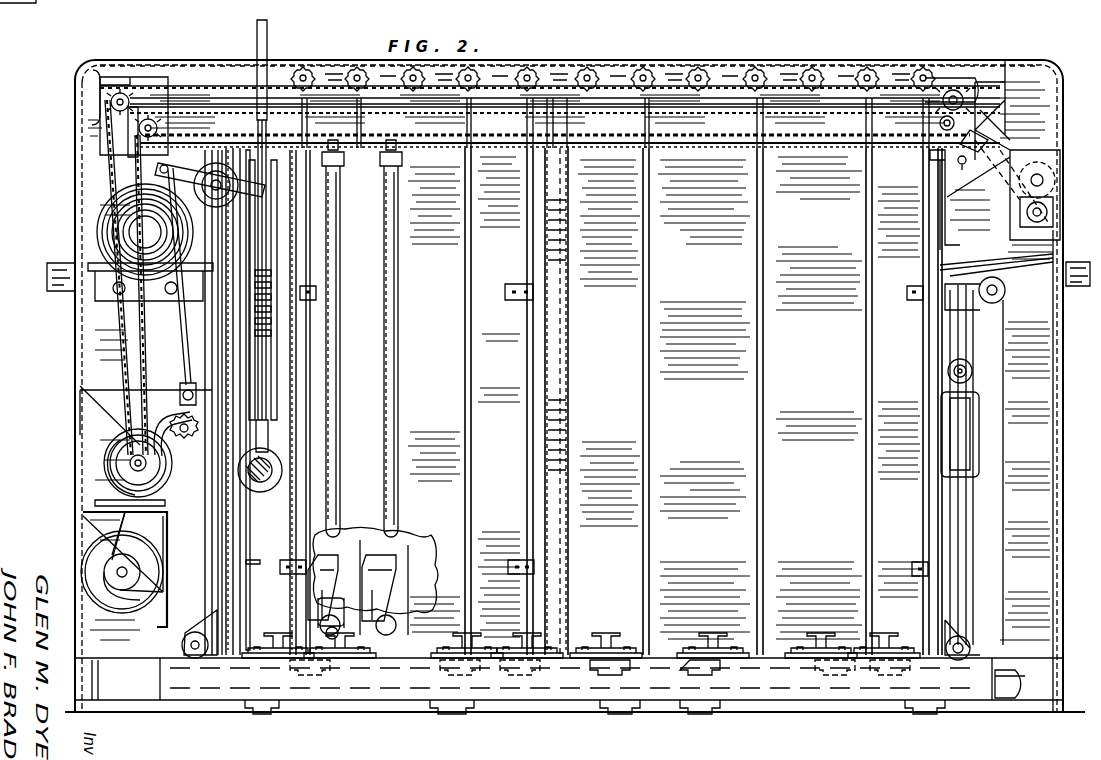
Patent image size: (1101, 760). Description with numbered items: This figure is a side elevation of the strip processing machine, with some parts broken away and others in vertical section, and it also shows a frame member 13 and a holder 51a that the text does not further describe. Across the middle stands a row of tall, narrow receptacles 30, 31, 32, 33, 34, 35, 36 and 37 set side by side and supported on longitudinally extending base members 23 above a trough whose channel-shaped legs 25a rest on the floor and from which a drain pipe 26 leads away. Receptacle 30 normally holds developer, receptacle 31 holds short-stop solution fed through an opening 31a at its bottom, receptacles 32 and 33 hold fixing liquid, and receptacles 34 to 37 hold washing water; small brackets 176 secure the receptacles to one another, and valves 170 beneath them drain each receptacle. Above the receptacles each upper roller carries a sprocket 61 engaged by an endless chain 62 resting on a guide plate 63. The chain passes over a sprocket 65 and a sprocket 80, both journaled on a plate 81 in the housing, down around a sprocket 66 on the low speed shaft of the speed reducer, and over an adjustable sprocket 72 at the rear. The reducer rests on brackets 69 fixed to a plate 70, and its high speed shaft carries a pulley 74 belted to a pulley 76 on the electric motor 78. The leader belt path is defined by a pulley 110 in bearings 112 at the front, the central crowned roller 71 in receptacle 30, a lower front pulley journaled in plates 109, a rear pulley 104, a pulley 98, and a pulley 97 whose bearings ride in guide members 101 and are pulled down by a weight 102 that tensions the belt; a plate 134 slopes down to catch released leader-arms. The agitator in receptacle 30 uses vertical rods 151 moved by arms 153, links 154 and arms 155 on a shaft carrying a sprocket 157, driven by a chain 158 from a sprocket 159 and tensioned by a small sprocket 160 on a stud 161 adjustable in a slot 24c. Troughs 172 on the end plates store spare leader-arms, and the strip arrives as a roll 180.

The frame member 13 is at (235, 322).
The base members 23 is at (112, 708).
The slot 24c is at (135, 425).
The supporting strips or legs 25a is at (700, 714).
The drain pipe 26 is at (1010, 700).
The receptacle 30 is at (270, 556).
The receptacle 31 is at (348, 405).
The opening 31a is at (320, 598).
The receptacle 32 is at (448, 378).
The receptacle 33 is at (510, 378).
The receptacle 34 is at (612, 378).
The receptacle 35 is at (710, 378).
The receptacle 36 is at (810, 378).
The receptacle 37 is at (903, 378).
The holder 51a is at (388, 577).
The sprocket 61 is at (323, 84).
The endless driven chain 62 is at (218, 80).
The guide plate 63 is at (600, 133).
The sprocket 65 is at (128, 96).
The sprocket 66 is at (168, 496).
The brackets 69 is at (134, 612).
The plate 70 is at (178, 605).
The central crowned roller 71 is at (262, 492).
The longitudinally adjustable sprocket 72 is at (965, 90).
The pulley 74 is at (104, 462).
The pulley 76 is at (108, 592).
The electric motor 78 is at (120, 612).
The sprocket 80 is at (130, 140).
The plate 81 is at (90, 92).
The pulley 97 is at (972, 373).
The pulley 98 is at (1002, 300).
The guide members 101 is at (960, 500).
The weight 102 is at (972, 434).
The pulley 104 is at (972, 645).
The plates 109 is at (178, 545).
The pulley 110 is at (276, 286).
The bearings 112 is at (150, 178).
The plate 134 is at (988, 262).
The rods 151 is at (263, 235).
The arms 153 is at (115, 168).
The links 154 is at (185, 335).
The arms 155 is at (192, 385).
The sprocket 157 is at (146, 415).
The chain 158 is at (160, 405).
The sprocket 159 is at (164, 484).
The small sprocket 160 is at (194, 424).
The stud 161 is at (168, 470).
The valves 170 is at (520, 655).
The troughs or receptacles 172 is at (46, 278).
The small brackets 176 is at (316, 292).
The roll 180 is at (112, 232).